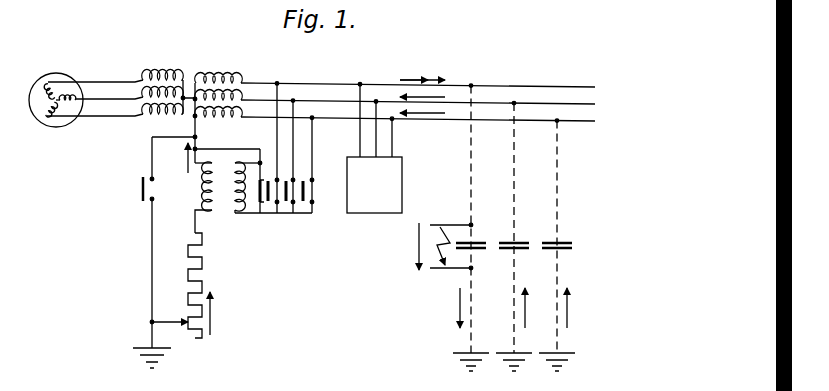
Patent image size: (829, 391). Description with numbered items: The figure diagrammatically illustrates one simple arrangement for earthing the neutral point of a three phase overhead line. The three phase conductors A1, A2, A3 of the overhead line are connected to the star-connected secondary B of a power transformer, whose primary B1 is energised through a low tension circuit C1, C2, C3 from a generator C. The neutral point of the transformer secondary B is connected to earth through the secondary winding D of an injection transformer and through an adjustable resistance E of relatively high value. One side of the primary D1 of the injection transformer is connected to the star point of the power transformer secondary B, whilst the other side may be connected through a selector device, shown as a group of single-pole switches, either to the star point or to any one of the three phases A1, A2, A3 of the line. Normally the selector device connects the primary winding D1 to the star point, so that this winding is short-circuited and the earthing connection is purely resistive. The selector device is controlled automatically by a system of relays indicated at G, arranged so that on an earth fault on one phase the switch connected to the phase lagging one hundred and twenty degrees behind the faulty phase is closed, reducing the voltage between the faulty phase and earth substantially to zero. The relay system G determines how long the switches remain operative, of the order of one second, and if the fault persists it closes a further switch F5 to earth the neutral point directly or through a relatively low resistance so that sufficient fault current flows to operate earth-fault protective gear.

The generator C is at (38, 108).
The low tension circuit conductor C1 is at (97, 80).
The low tension circuit conductor C2 is at (123, 98).
The low tension circuit conductor C3 is at (128, 115).
The power transformer primary B1 is at (167, 79).
The star-connected secondary B is at (212, 81).
The phase conductor A1 is at (292, 83).
The phase conductor A2 is at (318, 101).
The phase conductor A3 is at (340, 118).
The further switch F5 is at (143, 189).
The secondary winding of the injection transformer D is at (204, 189).
The primary of the injection transformer D1 is at (234, 205).
The adjustable resistance E is at (203, 283).
The system of relays G is at (372, 197).